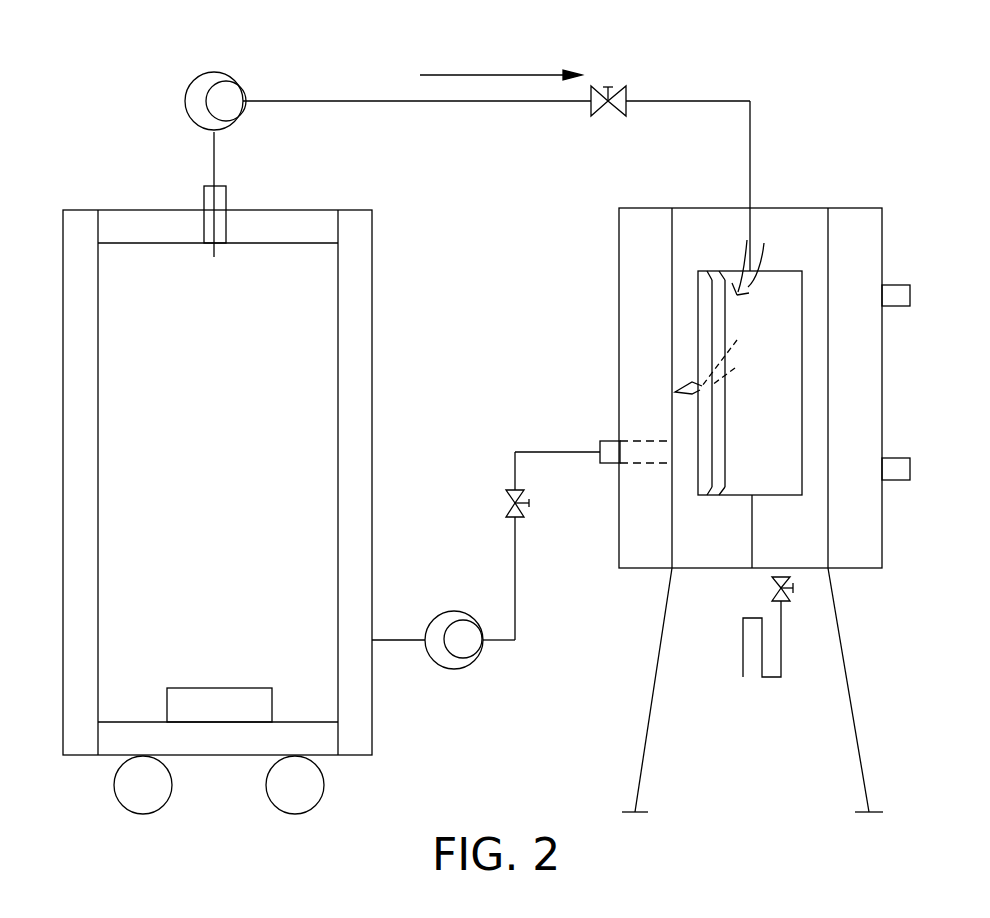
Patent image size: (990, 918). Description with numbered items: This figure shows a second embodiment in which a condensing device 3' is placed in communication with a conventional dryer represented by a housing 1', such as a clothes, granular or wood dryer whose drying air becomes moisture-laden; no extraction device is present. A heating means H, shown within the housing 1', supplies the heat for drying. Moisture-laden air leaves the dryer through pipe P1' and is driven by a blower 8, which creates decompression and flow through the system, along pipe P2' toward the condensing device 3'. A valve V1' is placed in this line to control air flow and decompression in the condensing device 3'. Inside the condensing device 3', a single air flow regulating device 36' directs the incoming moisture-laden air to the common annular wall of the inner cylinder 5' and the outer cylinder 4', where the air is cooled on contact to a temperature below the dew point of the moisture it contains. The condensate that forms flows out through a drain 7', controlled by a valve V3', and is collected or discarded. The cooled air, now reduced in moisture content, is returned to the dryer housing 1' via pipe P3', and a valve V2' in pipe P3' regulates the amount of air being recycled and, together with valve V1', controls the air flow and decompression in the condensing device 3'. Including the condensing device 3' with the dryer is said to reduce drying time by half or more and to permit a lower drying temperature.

The housing 1' is at (217, 512).
The heating means H is at (235, 688).
The pipe P1' is at (259, 194).
The blower 8 is at (230, 73).
The pipe P2' is at (496, 170).
The valve V1' is at (649, 87).
The condensing device 3' is at (802, 504).
The outer cylinder 4' is at (768, 388).
The inner cylinder 5' is at (706, 344).
The air flow regulating device 36' is at (750, 419).
The valve V3' is at (757, 593).
The drain 7' is at (783, 597).
The valve V2' is at (546, 505).
The pipe P3' is at (486, 560).